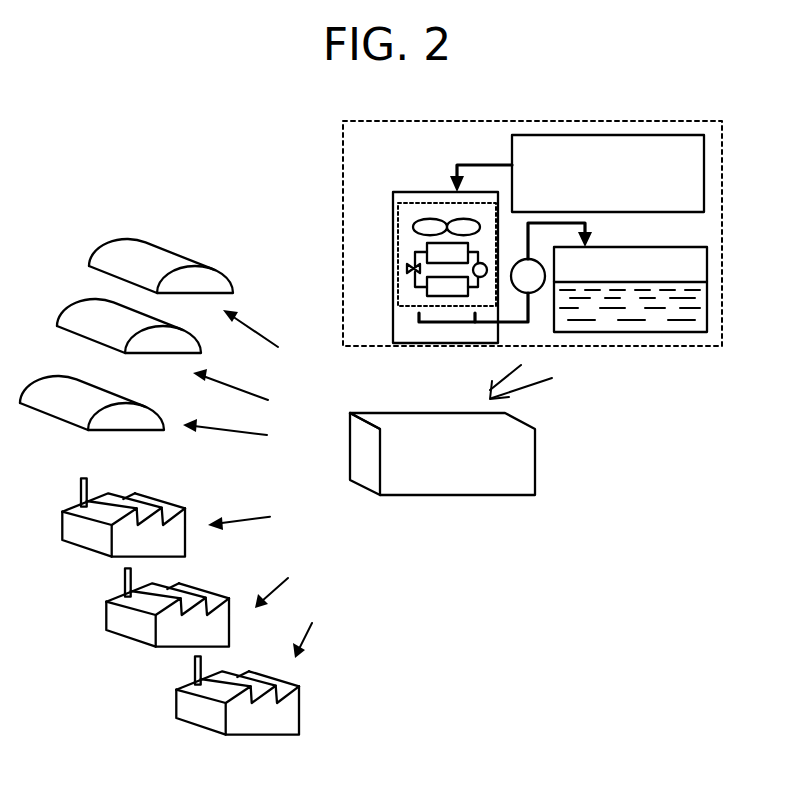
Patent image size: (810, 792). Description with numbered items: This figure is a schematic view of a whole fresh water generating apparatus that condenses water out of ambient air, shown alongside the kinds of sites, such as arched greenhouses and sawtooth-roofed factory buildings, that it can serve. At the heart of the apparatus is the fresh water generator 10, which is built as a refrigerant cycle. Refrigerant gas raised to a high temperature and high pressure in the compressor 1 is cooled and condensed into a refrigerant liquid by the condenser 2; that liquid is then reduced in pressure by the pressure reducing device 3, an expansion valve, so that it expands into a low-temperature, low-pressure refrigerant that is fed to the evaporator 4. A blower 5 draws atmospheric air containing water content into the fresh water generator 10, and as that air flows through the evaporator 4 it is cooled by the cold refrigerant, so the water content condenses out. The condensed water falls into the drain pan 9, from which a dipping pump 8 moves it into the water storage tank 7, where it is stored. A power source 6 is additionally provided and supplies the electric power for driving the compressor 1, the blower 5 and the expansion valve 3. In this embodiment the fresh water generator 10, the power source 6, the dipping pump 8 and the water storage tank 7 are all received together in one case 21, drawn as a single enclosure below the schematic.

The compressor 1 is at (487, 266).
The condenser 2 is at (432, 249).
The pressure reducing device 3 is at (407, 268).
The evaporator 4 is at (432, 293).
The blower 5 is at (428, 214).
The power source 6 is at (672, 142).
The water storage tank 7 is at (698, 267).
The dipping pump 8 is at (538, 291).
The drain pan 9 is at (422, 326).
The fresh water generator 10 is at (437, 196).
The case 21 is at (455, 478).